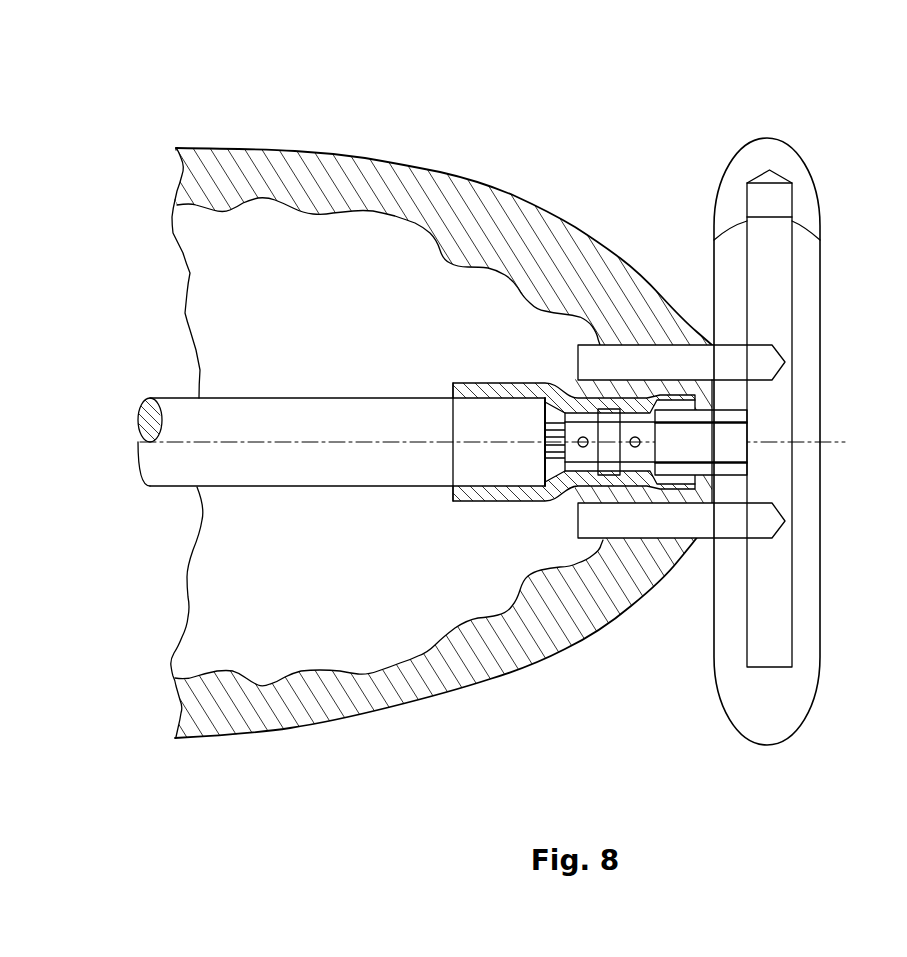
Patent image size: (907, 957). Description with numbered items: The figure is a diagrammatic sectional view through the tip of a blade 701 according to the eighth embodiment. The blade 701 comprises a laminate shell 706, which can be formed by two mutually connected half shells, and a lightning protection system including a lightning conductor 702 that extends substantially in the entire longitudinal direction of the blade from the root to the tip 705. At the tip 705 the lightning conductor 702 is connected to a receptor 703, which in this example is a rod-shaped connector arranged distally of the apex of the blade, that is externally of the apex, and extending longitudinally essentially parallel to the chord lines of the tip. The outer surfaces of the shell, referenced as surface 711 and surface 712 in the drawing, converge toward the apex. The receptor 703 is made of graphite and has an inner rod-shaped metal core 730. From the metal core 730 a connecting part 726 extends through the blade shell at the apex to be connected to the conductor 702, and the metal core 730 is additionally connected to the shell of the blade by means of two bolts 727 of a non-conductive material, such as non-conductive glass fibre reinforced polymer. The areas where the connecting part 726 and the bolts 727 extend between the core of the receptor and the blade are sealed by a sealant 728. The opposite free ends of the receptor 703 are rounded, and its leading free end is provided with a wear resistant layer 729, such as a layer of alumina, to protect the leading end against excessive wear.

The blade 701 is at (200, 146).
The lightning conductor 702 is at (165, 472).
The receptor 703 is at (823, 252).
The tip 705 is at (508, 193).
The laminate shell 706 is at (180, 163).
The upper outer surface 711 is at (380, 162).
The lower outer surface 712 is at (320, 726).
The connecting part 726 is at (725, 458).
The bolts 727 is at (627, 528).
The sealant 728 is at (700, 335).
The wear resistant layer 729 is at (768, 150).
The metal core 730 is at (762, 578).